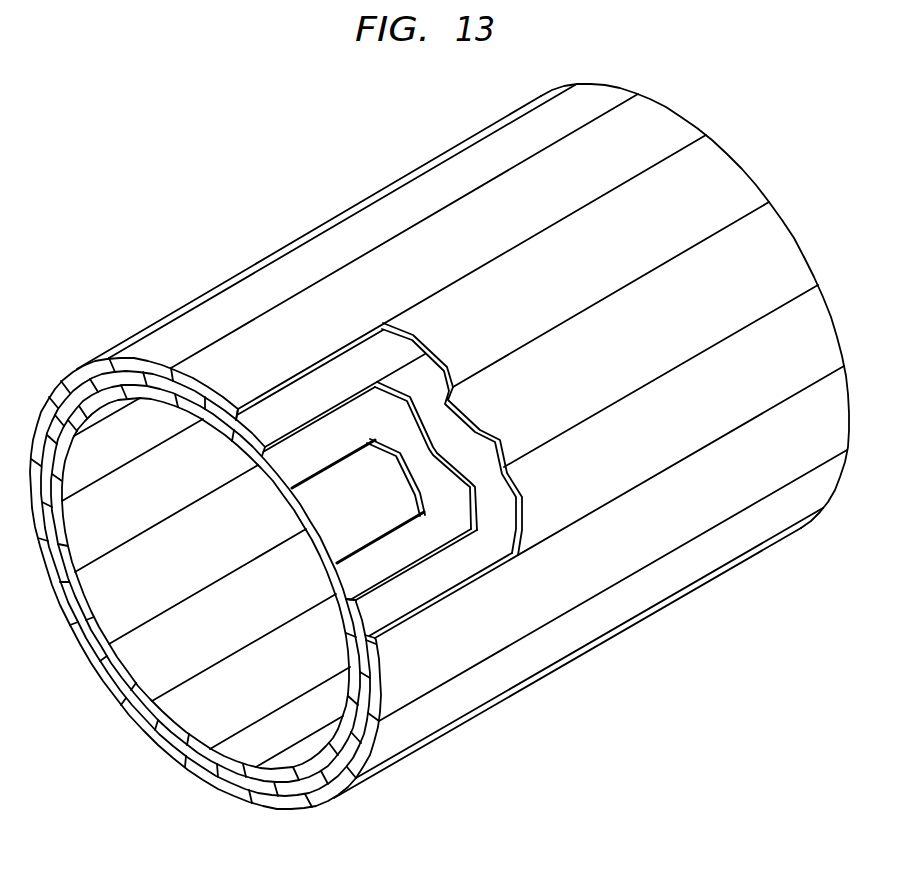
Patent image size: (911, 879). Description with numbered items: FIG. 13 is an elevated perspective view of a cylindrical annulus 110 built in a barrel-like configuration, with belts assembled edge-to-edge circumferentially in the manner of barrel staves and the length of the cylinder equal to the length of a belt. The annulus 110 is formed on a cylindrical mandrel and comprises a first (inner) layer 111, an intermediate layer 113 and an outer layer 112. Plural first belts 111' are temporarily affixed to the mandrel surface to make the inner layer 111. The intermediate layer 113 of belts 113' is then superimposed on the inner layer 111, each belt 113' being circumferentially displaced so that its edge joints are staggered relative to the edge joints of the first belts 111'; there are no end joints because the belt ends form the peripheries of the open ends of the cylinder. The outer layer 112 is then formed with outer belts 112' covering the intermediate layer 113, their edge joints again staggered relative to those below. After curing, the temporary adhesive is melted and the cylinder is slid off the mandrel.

The cylindrical annulus 110 is at (243, 180).
The first (inner) layer 111 is at (238, 583).
The outer layer 112 is at (276, 566).
The intermediate layer 113 is at (259, 575).
The first belts 111' is at (196, 583).
The outer belts 112' is at (463, 441).
The intermediate belts 113' is at (468, 454).